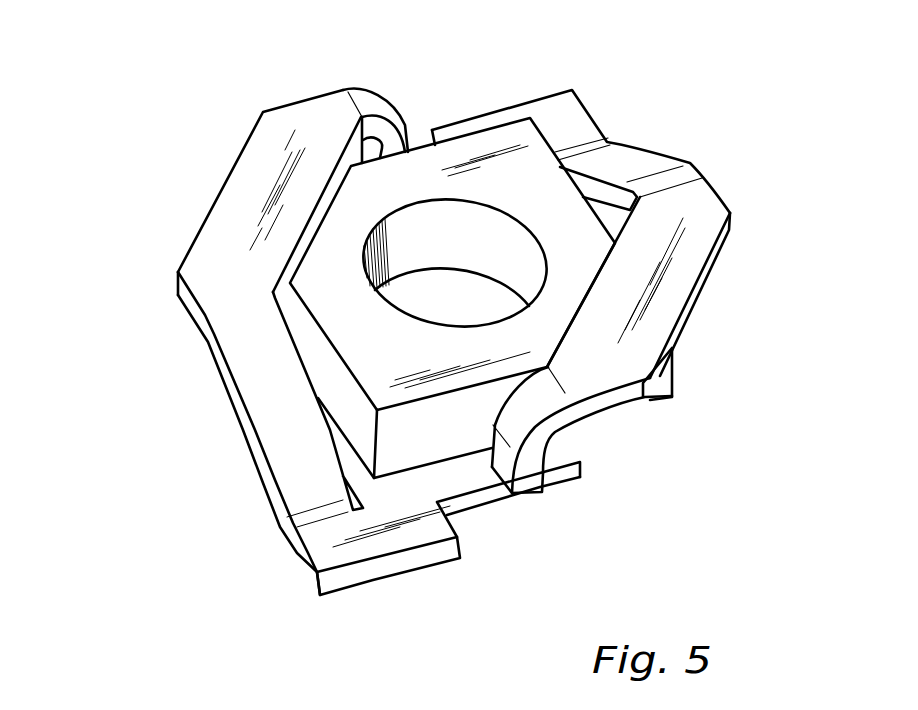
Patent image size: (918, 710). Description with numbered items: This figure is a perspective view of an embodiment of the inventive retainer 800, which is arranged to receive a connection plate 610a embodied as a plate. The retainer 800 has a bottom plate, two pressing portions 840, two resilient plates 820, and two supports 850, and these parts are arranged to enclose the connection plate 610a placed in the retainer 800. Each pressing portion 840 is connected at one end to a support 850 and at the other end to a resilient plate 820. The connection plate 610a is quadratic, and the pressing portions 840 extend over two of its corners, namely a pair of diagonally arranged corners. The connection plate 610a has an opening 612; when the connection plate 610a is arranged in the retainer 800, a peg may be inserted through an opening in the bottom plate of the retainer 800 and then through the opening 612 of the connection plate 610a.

The retainer 800 is at (200, 127).
The connection plate 610a is at (537, 172).
The opening of the connection plate 612 is at (427, 305).
The resilient plate 820 is at (633, 165).
The pressing portion 840 is at (268, 172).
The support 850 is at (388, 133).